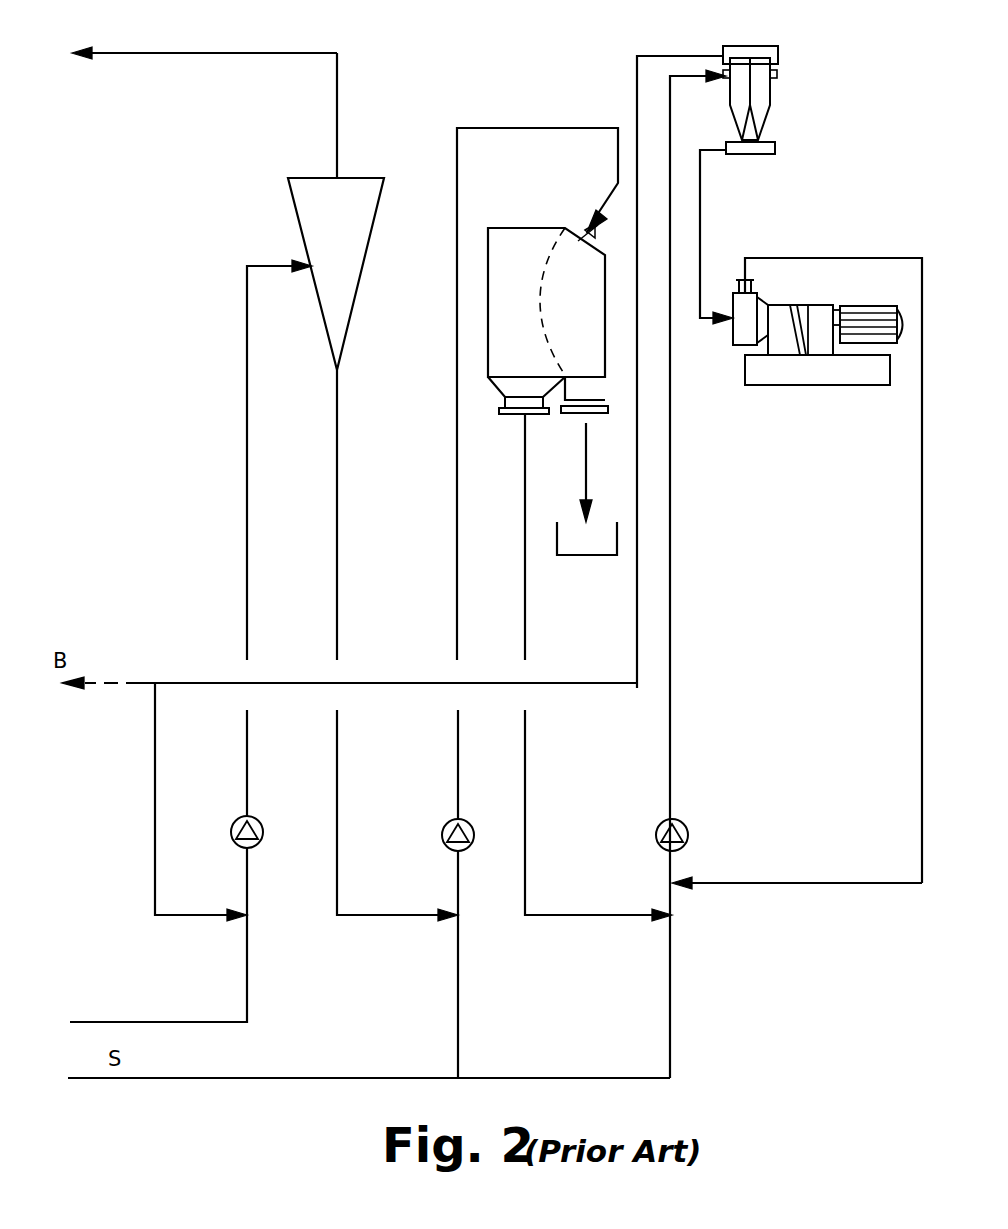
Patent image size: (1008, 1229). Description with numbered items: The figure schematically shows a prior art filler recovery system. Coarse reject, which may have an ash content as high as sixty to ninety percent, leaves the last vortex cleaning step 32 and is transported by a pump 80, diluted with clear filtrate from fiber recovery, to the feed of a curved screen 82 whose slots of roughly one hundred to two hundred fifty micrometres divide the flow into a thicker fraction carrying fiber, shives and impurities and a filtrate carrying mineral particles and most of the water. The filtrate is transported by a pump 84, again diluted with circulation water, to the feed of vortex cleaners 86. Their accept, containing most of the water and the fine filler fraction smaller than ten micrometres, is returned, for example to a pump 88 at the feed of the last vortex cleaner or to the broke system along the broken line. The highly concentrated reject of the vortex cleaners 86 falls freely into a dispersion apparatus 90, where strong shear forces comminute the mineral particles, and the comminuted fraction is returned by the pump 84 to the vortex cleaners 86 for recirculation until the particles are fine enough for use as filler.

The last vortex cleaning step 32 is at (340, 208).
The pump 80 is at (442, 839).
The curved screen 82 is at (518, 230).
The pump 84 is at (658, 841).
The vortex cleaners 86 is at (755, 52).
The pump 88 is at (231, 837).
The dispersion apparatus 90 is at (822, 315).